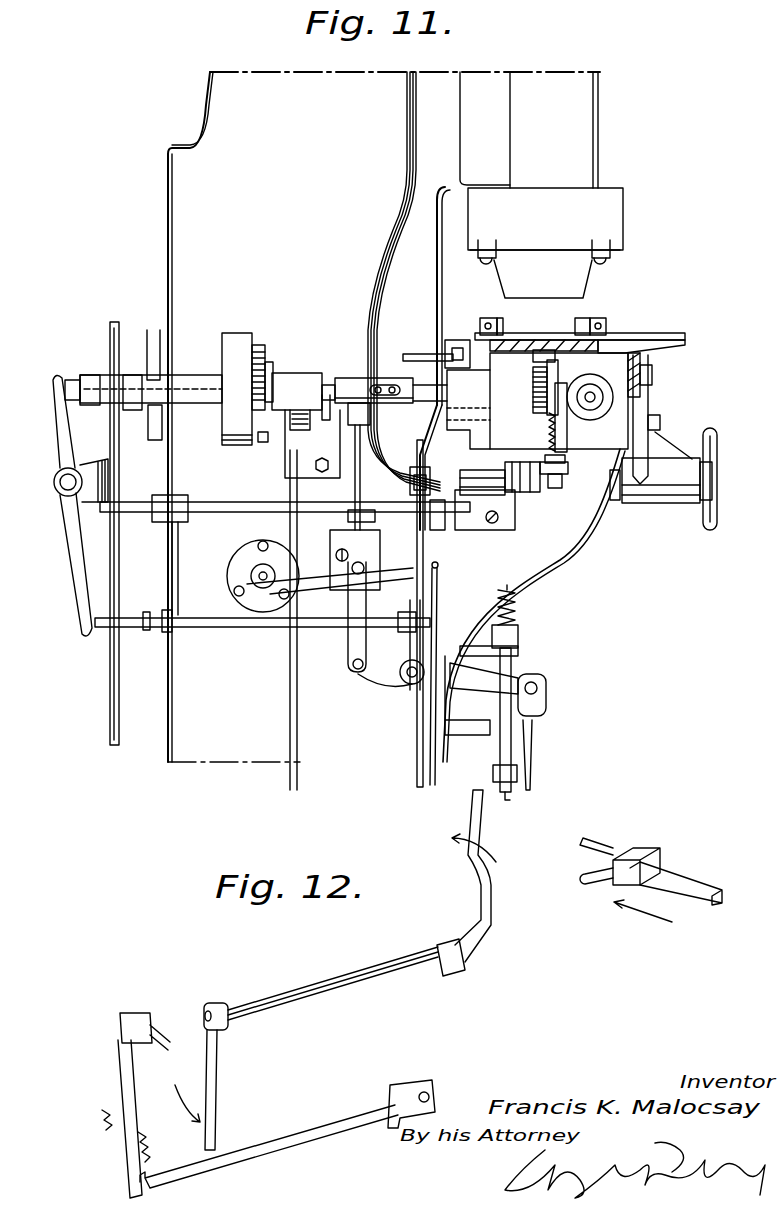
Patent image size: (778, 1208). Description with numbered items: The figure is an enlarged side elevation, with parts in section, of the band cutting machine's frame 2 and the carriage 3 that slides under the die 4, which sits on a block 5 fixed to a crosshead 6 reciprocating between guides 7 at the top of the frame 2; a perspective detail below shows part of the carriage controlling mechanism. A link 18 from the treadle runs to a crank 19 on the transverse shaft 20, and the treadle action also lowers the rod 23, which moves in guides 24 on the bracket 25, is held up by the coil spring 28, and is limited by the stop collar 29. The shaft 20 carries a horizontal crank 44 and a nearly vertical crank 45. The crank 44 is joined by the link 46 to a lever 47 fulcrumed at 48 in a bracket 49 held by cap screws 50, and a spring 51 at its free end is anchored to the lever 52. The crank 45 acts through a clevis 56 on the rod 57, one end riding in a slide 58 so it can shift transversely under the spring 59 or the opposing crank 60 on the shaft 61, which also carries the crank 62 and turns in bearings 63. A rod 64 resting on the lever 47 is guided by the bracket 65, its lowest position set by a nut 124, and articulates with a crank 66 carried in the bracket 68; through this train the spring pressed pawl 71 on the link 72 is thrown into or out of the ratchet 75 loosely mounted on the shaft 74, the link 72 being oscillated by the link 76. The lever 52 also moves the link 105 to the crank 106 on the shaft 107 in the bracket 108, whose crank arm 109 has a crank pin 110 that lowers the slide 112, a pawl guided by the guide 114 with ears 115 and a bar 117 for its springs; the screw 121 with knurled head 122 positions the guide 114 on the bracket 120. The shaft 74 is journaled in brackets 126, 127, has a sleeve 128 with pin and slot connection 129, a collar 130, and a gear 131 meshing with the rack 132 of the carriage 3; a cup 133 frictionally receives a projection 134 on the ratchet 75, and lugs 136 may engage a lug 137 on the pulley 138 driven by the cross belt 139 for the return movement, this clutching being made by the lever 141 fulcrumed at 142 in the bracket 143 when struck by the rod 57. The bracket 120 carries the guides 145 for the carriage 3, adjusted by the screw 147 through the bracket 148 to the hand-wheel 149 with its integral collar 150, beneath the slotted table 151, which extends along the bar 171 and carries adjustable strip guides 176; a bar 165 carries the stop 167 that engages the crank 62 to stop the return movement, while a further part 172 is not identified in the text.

In FIG. 11, the frame 2 is at (158, 693).
In FIG. 11, the carriage 3 is at (556, 352).
In FIG. 11, the die 4 is at (583, 268).
In FIG. 11, the block 5 is at (624, 212).
In FIG. 11, the crosshead 6 is at (596, 143).
In FIG. 11, the guides 7 is at (470, 131).
In FIG. 11, the link 18 is at (532, 742).
In FIG. 11, the crank 19 is at (520, 680).
In FIG. 11, the shaft 20 is at (410, 684).
In FIG. 11, the rod 23 is at (506, 799).
In FIG. 11, the guides 24 is at (518, 636).
In FIG. 11, the bracket 25 is at (470, 718).
In FIG. 11, the coil spring 28 is at (512, 598).
In FIG. 11, the stop collar 29 is at (493, 771).
In FIG. 11, the crank 44 is at (378, 680).
In FIG. 11, the crank 45 is at (410, 640).
In FIG. 12, the crank 45 is at (432, 1105).
In FIG. 11, the link 46 is at (350, 634).
In FIG. 11, the lever 47 is at (322, 586).
In FIG. 11, the fulcrum 48 is at (256, 572).
In FIG. 11, the bracket 49 is at (250, 576).
In FIG. 11, the cap screws 50 is at (263, 541).
In FIG. 11, the spring 51 is at (436, 604).
In FIG. 12, the lever 52 is at (466, 898).
In FIG. 11, the clevis 56 is at (407, 612).
In FIG. 11, the rod 57 is at (257, 617).
In FIG. 12, the rod 57 is at (338, 1115).
In FIG. 11, the slide 58 is at (165, 630).
In FIG. 11, the spring 59 is at (148, 612).
In FIG. 12, the spring 59 is at (140, 1140).
In FIG. 11, the crank 60 is at (178, 573).
In FIG. 12, the crank 60 is at (218, 1086).
In FIG. 11, the shaft 61 is at (236, 505).
In FIG. 12, the shaft 61 is at (321, 992).
In FIG. 11, the crank 62 is at (437, 332).
In FIG. 11, the bearings 63 is at (164, 525).
In FIG. 11, the rod 64 is at (361, 505).
In FIG. 11, the bracket 65 is at (330, 538).
In FIG. 11, the crank 66 is at (371, 415).
In FIG. 11, the bracket 68 is at (310, 478).
In FIG. 11, the pawl 71 is at (262, 442).
In FIG. 11, the link 72 is at (298, 373).
In FIG. 11, the shaft 74 is at (328, 384).
In FIG. 11, the ratchet 75 is at (270, 362).
In FIG. 11, the link 76 is at (290, 675).
In FIG. 11, the link 105 is at (417, 700).
In FIG. 11, the crank 106 is at (418, 467).
In FIG. 11, the shaft 107 is at (483, 478).
In FIG. 11, the bracket 108 is at (483, 524).
In FIG. 11, the crank arm 109 is at (540, 492).
In FIG. 11, the crank pin 110 is at (562, 478).
In FIG. 11, the slide 112 is at (560, 468).
In FIG. 11, the guide 114 is at (549, 437).
In FIG. 11, the ears 115 is at (549, 422).
In FIG. 11, the bar 117 is at (552, 470).
In FIG. 11, the bracket 120 is at (612, 415).
In FIG. 11, the screw 121 is at (594, 392).
In FIG. 11, the knurled head 122 is at (598, 406).
In FIG. 11, the nut 124 is at (376, 520).
In FIG. 11, the bracket 126 is at (97, 375).
In FIG. 11, the bracket 127 is at (490, 405).
In FIG. 11, the sleeve 128 is at (350, 377).
In FIG. 11, the pin and slot connection 129 is at (386, 384).
In FIG. 11, the collar 130 is at (450, 389).
In FIG. 11, the gear 131 is at (532, 391).
In FIG. 11, the rack 132 is at (545, 360).
In FIG. 11, the cup 133 is at (238, 340).
In FIG. 11, the projection 134 is at (260, 345).
In FIG. 11, the lugs 136 is at (152, 352).
In FIG. 11, the lug 137 is at (138, 410).
In FIG. 11, the pulley 138 is at (110, 345).
In FIG. 11, the cross belt 139 is at (110, 672).
In FIG. 11, the lever 141 is at (56, 432).
In FIG. 11, the fulcrum 142 is at (60, 486).
In FIG. 11, the bracket 143 is at (94, 466).
In FIG. 11, the guides 145 is at (652, 345).
In FIG. 11, the screw 147 is at (620, 495).
In FIG. 11, the bracket 148 is at (660, 500).
In FIG. 11, the hand-wheel 149 is at (708, 528).
In FIG. 11, the collar 150 is at (612, 482).
In FIG. 11, the table 151 is at (542, 333).
In FIG. 11, the bar 165 is at (460, 354).
In FIG. 12, the bar 165 is at (694, 878).
In FIG. 11, the stop 167 is at (410, 356).
In FIG. 12, the stop 167 is at (600, 885).
In FIG. 11, the bar 171 is at (645, 388).
In FIG. 11, the block 172 is at (648, 371).
In FIG. 11, the strip guides 176 is at (505, 322).